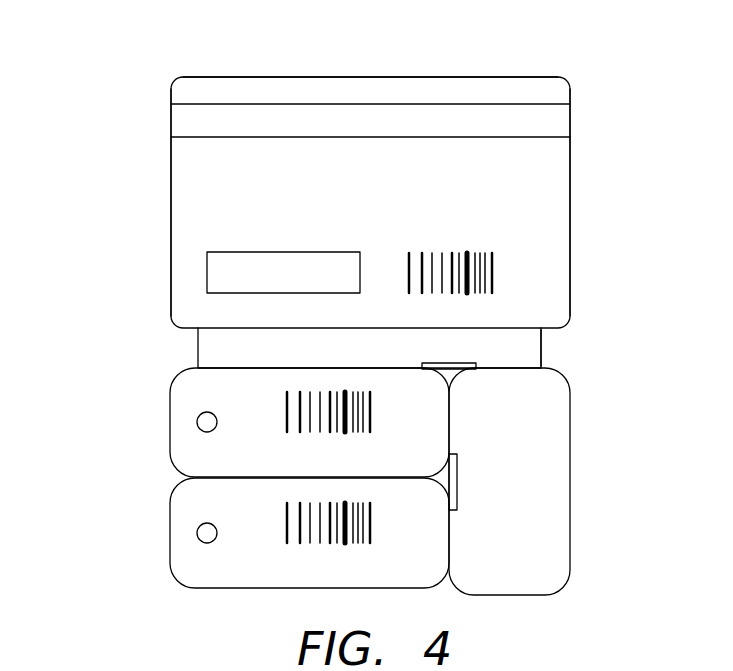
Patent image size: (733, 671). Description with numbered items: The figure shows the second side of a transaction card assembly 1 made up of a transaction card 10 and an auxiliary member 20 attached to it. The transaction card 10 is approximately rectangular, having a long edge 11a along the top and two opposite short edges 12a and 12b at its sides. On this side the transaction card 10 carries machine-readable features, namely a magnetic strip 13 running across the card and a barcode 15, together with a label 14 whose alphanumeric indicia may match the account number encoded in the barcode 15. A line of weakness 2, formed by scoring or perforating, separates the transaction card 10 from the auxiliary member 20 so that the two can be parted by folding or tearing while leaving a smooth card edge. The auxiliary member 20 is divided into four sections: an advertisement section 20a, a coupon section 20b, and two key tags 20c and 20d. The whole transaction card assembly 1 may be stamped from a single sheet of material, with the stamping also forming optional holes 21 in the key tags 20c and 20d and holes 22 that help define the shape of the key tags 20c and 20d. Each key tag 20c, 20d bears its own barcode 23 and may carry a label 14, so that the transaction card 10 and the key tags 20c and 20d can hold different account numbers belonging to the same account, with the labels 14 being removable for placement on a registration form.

The transaction card assembly 1 is at (95, 68).
The transaction card 10 is at (571, 168).
The long edge 11a is at (500, 77).
The short edge 12a is at (171, 180).
The short edge 12b is at (571, 220).
The magnetic strip 13 is at (571, 125).
The label 14 is at (207, 278).
The barcode 15 is at (492, 270).
The line of weakness 2 is at (523, 330).
The auxiliary member 20 is at (574, 578).
The advertisement section 20a is at (541, 348).
The coupon section 20b is at (570, 513).
The key tag 20c is at (171, 582).
The key tag 20d is at (169, 442).
The hole 21 is at (198, 416).
The hole 22 is at (455, 371).
The barcode 23 is at (284, 418).